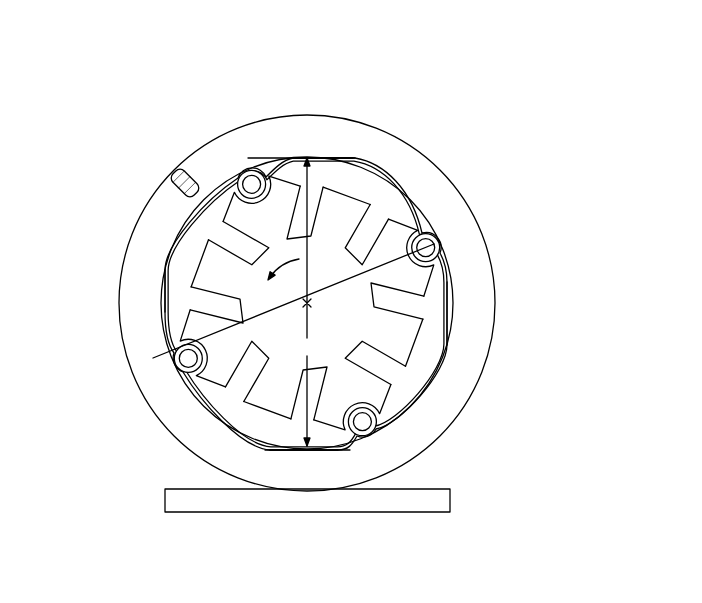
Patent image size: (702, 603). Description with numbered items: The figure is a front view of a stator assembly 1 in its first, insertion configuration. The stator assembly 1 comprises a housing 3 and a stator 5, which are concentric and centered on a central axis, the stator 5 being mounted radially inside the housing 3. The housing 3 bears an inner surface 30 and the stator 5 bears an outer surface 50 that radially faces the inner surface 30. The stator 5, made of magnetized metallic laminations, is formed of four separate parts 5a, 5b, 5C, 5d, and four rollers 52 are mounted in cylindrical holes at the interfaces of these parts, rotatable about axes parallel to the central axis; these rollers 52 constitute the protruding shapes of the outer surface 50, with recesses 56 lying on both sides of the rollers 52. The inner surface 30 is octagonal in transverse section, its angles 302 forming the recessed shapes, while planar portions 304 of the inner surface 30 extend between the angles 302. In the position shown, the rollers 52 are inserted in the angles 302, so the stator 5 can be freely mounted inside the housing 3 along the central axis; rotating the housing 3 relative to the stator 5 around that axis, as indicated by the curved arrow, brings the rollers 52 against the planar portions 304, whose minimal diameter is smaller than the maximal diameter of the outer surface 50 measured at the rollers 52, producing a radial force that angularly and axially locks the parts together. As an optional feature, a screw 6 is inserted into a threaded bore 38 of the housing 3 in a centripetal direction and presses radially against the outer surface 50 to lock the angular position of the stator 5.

The stator assembly 1 is at (460, 103).
The housing 3 is at (460, 388).
The stator 5 is at (440, 346).
The separate part 5a is at (444, 298).
The separate part 5b is at (278, 437).
The separate part 5C is at (198, 240).
The separate part 5d is at (406, 186).
The screw 6 is at (192, 158).
The inner surface 30 is at (239, 305).
The threaded bore 38 is at (143, 207).
The outer surface 50 is at (418, 183).
The roller 52 is at (251, 172).
The recess 56 is at (223, 179).
The angle 302 is at (204, 276).
The planar portion 304 is at (250, 342).